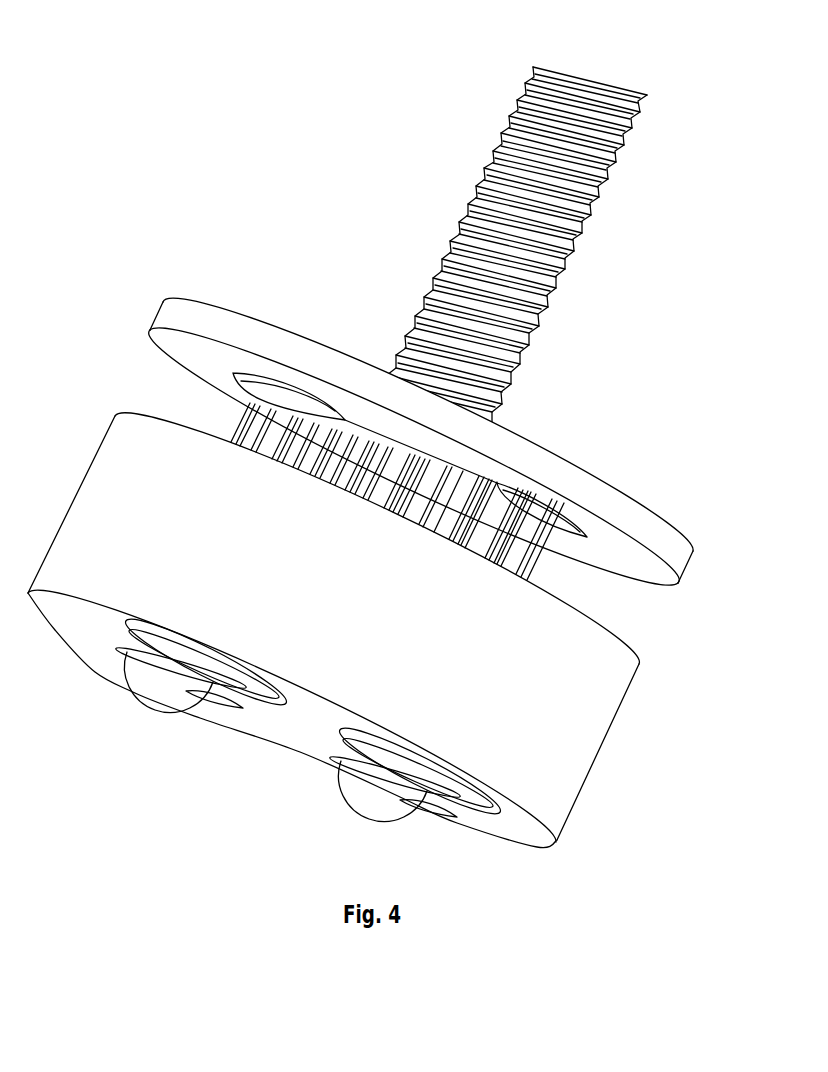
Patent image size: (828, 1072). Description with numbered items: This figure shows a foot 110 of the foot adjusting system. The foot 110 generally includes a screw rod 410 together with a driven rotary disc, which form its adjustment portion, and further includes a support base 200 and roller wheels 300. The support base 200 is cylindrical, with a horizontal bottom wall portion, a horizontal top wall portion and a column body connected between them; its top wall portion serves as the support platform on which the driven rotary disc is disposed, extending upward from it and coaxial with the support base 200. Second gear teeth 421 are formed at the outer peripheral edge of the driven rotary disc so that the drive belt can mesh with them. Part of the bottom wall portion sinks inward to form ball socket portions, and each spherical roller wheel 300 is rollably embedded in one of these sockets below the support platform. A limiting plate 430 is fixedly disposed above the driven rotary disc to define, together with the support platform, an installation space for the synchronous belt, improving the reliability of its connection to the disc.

The foot 110 is at (90, 34).
The support base 200 is at (583, 726).
The roller wheel 300 is at (151, 681).
The screw rod 410 is at (604, 127).
The second gear teeth 421 is at (512, 545).
The limiting plate 430 is at (523, 459).